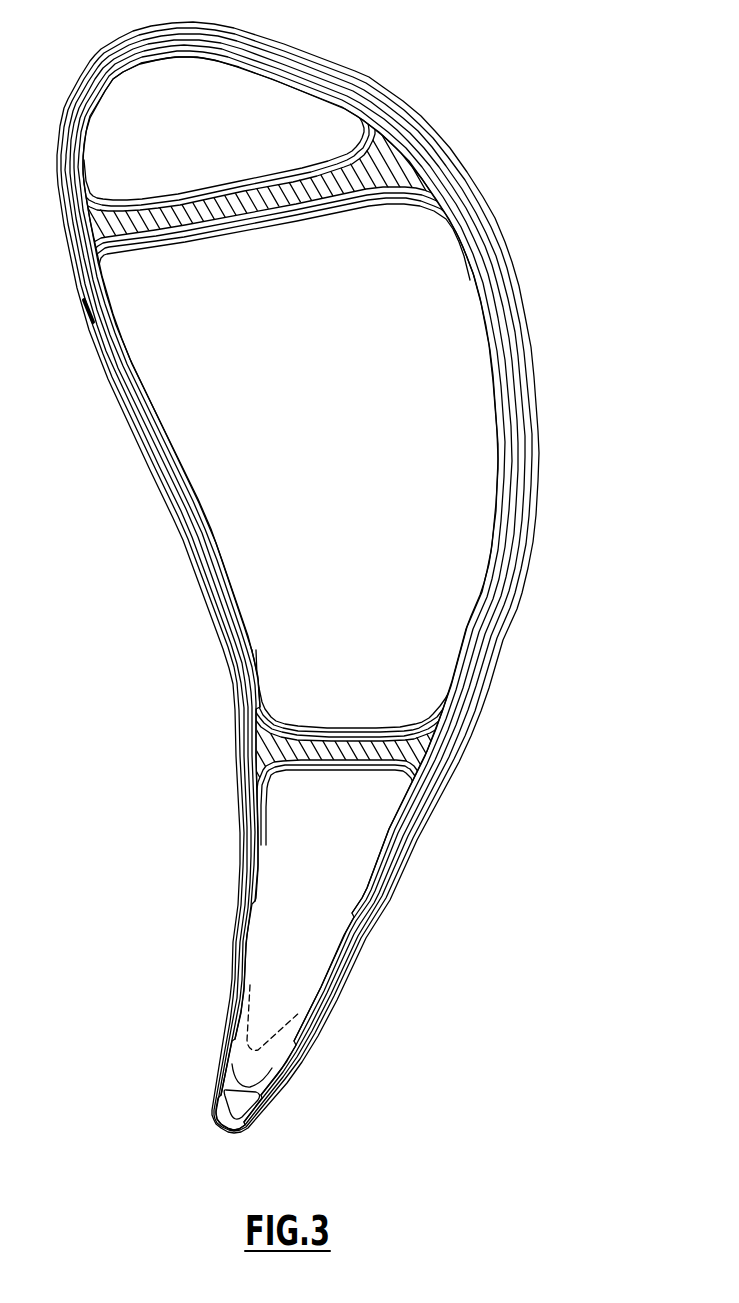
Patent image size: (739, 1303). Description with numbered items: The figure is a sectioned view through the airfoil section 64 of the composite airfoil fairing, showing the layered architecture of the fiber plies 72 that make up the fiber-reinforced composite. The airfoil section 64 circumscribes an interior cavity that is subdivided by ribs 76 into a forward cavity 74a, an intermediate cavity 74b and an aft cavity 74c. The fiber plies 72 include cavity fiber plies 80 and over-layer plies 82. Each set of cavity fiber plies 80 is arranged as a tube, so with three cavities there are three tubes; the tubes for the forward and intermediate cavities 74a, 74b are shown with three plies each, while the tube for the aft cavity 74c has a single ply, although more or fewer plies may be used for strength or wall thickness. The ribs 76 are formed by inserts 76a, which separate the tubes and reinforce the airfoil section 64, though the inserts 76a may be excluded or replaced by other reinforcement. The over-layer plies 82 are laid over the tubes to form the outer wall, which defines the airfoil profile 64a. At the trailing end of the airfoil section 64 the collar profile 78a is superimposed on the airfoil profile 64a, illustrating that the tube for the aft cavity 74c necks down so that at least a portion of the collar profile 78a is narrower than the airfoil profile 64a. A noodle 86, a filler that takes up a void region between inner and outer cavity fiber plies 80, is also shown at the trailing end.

The airfoil section 64 is at (300, 584).
The airfoil profile 64a is at (472, 720).
The fiber plies 72 is at (502, 323).
The forward cavity 74a is at (302, 115).
The intermediate cavity 74b is at (458, 486).
The aft cavity 74c is at (345, 871).
The ribs 76 is at (276, 200).
The inserts 76a is at (372, 172).
The collar profile 78a is at (248, 1040).
The cavity fiber plies 80 is at (168, 200).
The over-layer plies 82 is at (92, 323).
The noodle 86 is at (242, 1101).